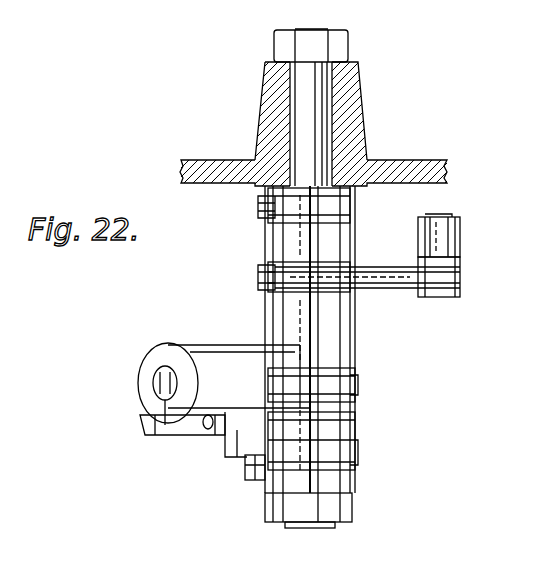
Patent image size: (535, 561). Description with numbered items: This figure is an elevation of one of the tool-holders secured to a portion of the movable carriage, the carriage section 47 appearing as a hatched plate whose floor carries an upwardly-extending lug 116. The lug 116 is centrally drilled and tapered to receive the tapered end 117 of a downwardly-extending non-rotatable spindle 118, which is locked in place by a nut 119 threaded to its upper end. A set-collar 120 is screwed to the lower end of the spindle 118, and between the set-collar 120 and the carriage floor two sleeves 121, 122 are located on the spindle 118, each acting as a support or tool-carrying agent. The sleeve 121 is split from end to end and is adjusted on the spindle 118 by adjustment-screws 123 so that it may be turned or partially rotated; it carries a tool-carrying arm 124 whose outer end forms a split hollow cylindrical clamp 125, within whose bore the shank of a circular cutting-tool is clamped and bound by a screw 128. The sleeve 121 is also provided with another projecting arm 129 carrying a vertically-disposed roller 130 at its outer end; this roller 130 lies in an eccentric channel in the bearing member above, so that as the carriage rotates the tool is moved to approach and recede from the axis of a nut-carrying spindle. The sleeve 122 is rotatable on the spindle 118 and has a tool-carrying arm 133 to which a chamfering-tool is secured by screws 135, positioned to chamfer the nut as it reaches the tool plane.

The carriage section 47 is at (425, 166).
The upwardly-extending lug 116 is at (353, 109).
The tapered end 117 is at (300, 107).
The non-rotatable spindle 118 is at (318, 522).
The nut 119 is at (350, 47).
The set-collar 120 is at (357, 502).
The sleeve 121 is at (357, 335).
The sleeve 122 is at (357, 432).
The adjustment-screws 123 is at (264, 375).
The tool-carrying arm 124 is at (239, 376).
The split hollow cylindrical clamp 125 is at (145, 370).
The screw 128 is at (143, 432).
The projecting arm 129 is at (375, 268).
The roller 130 is at (458, 242).
The tool-carrying arm 133 is at (226, 447).
The screws 135 is at (251, 480).